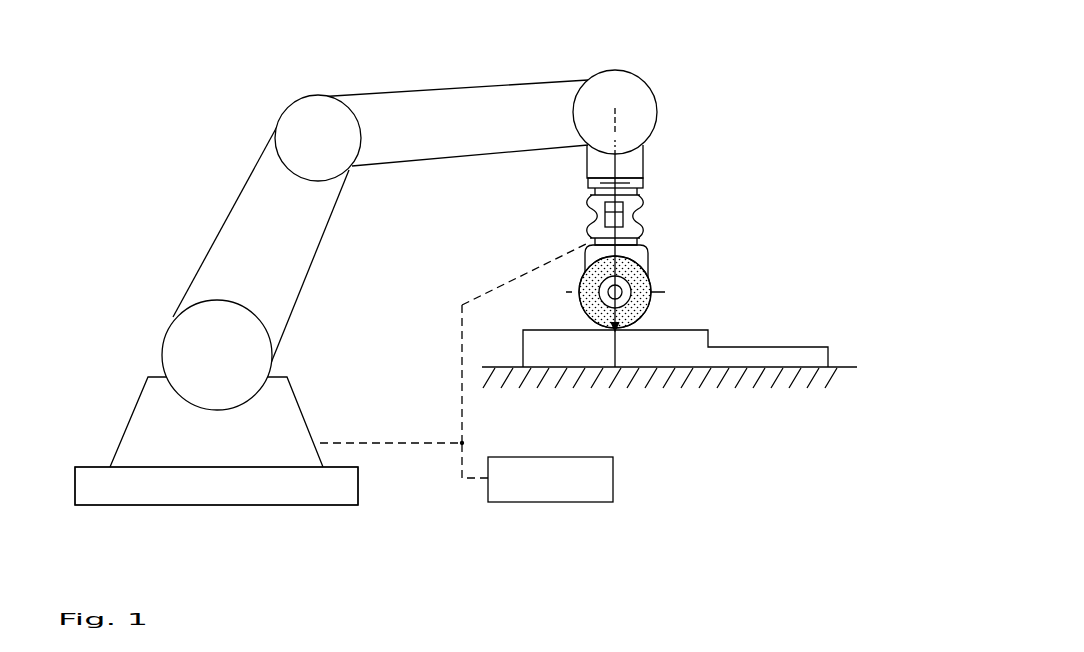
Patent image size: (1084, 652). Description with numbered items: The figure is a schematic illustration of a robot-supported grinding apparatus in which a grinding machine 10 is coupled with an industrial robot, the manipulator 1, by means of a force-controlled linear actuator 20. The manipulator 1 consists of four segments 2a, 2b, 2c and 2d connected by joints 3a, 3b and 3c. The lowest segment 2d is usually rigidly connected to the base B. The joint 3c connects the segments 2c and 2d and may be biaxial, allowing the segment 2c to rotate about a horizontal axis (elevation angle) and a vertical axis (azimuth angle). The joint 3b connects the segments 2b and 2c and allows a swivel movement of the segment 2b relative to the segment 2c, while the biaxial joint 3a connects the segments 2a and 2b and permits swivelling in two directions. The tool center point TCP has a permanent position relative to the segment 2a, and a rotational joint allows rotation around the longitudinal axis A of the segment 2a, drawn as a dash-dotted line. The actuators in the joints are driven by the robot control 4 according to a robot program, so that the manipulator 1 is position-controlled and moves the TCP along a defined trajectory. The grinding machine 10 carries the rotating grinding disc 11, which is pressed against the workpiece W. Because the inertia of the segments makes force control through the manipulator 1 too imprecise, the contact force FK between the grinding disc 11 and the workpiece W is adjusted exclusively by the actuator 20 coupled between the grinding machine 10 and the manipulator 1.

The manipulator 1 is at (186, 59).
The base B is at (248, 497).
The segment 2d is at (283, 415).
The segment 2c is at (298, 250).
The segment 2b is at (508, 137).
The segment 2a is at (603, 163).
The joint 3c is at (187, 335).
The joint 3b is at (310, 115).
The joint 3a is at (640, 98).
The longitudinal axis A is at (617, 121).
The tool center point TCP is at (622, 178).
The linear actuator 20 is at (640, 217).
The grinding machine 10 is at (650, 257).
The grinding disc 11 is at (652, 300).
The contact force FK is at (606, 258).
The workpiece W is at (645, 348).
The robot control 4 is at (466, 372).